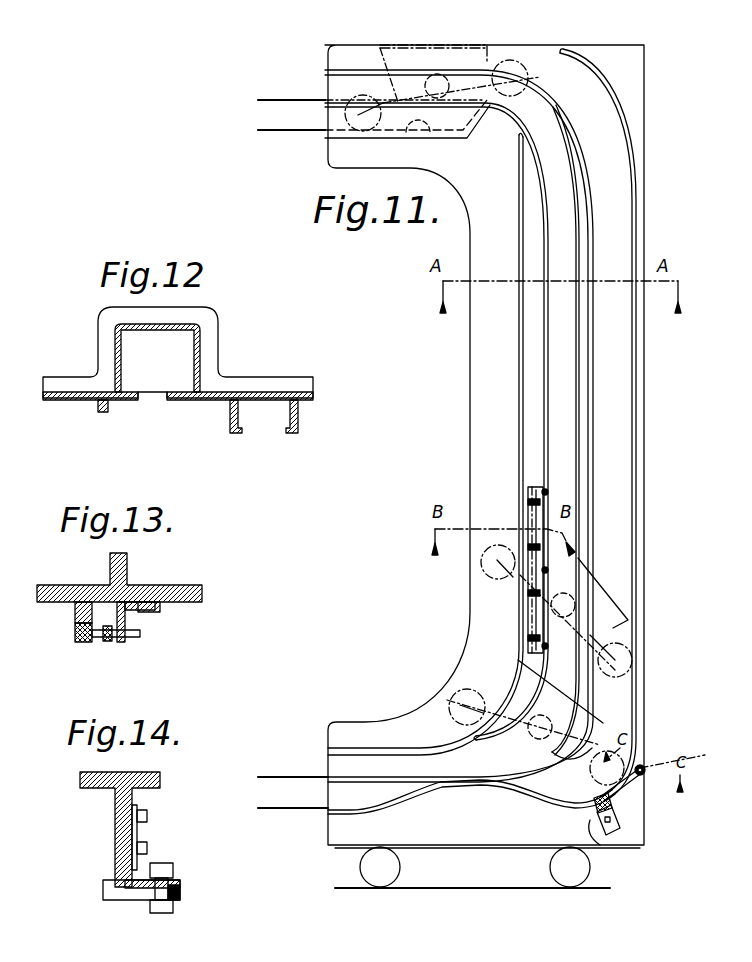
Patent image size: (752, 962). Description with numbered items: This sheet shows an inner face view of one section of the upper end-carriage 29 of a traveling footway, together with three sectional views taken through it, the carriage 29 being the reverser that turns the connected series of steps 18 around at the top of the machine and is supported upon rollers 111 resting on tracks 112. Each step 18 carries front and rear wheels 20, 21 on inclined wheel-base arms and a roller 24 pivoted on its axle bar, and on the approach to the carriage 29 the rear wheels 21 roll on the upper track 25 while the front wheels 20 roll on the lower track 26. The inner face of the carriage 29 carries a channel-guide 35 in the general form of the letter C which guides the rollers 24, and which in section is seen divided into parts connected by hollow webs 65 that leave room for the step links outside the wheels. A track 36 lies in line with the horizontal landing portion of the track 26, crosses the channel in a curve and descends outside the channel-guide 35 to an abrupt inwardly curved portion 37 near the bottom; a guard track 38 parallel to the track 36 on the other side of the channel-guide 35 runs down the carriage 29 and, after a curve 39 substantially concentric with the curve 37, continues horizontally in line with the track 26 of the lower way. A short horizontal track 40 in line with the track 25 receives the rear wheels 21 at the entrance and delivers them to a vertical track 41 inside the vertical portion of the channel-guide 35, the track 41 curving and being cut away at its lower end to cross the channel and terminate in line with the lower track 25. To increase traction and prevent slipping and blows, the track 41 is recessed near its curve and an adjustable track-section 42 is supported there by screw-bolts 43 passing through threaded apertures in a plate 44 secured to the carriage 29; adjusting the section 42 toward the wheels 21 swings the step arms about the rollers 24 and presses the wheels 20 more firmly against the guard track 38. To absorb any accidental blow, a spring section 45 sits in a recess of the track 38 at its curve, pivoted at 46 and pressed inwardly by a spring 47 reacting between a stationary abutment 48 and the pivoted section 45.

In FIG. 11, the step 18 is at (417, 47).
In FIG. 11, the front wheel 20 is at (508, 68).
In FIG. 11, the rear wheel 21 is at (360, 120).
In FIG. 11, the roller 24 is at (440, 80).
In FIG. 11, the upper track 25 is at (263, 133).
In FIG. 11, the lower track 26 is at (263, 100).
In FIG. 11, the end-carriage 29 is at (478, 390).
In FIG. 13, the end-carriage 29 is at (130, 585).
In FIG. 14, the end-carriage 29 is at (115, 806).
In FIG. 11, the channel-guide 35 is at (558, 335).
In FIG. 12, the channel-guide 35 is at (148, 405).
In FIG. 11, the track 36 is at (383, 102).
In FIG. 12, the track 36 is at (236, 434).
In FIG. 11, the inwardly curved portion 37 is at (580, 762).
In FIG. 11, the guard track 38 is at (630, 205).
In FIG. 12, the guard track 38 is at (293, 434).
In FIG. 11, the curve 39 is at (577, 802).
In FIG. 11, the short horizontal track 40 is at (412, 133).
In FIG. 11, the vertical track 41 is at (517, 192).
In FIG. 12, the vertical track 41 is at (100, 410).
In FIG. 11, the adjustable track-section 42 is at (528, 508).
In FIG. 13, the adjustable track-section 42 is at (75, 635).
In FIG. 11, the screw-bolt 43 is at (528, 595).
In FIG. 13, the screw-bolt 43 is at (102, 638).
In FIG. 11, the plate 44 is at (537, 617).
In FIG. 13, the plate 44 is at (125, 622).
In FIG. 11, the spring section 45 is at (613, 780).
In FIG. 14, the spring section 45 is at (120, 900).
In FIG. 11, the pivot 46 is at (648, 768).
In FIG. 14, the pivot 46 is at (172, 910).
In FIG. 11, the spring 47 is at (592, 822).
In FIG. 11, the stationary abutment 48 is at (617, 817).
In FIG. 12, the hollow web 65 is at (115, 350).
In FIG. 11, the roller 111 is at (390, 866).
In FIG. 11, the track 112 is at (473, 889).